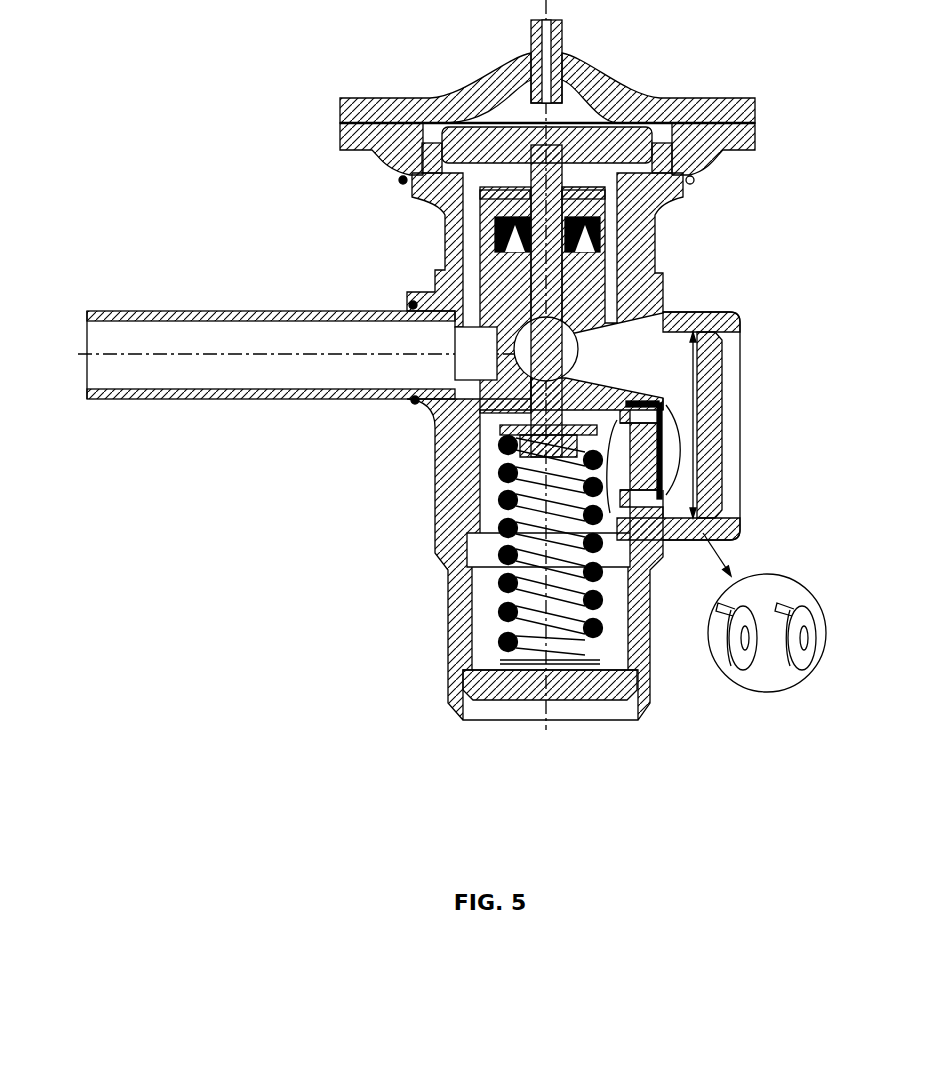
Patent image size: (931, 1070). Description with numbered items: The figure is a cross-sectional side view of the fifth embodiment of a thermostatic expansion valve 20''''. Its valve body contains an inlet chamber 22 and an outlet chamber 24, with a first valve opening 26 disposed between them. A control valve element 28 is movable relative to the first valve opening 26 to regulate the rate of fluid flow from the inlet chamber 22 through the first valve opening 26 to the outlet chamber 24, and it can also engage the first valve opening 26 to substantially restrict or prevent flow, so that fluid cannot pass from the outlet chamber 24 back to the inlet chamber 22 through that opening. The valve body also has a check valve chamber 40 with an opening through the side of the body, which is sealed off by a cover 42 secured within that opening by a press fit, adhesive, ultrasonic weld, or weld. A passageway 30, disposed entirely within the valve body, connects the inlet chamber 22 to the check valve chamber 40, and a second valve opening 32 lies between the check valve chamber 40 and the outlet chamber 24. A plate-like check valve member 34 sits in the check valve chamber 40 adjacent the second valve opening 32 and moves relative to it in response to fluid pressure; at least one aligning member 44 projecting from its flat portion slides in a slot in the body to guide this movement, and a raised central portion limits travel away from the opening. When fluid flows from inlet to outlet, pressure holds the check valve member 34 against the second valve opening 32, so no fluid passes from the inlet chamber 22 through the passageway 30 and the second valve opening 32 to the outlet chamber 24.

The valve 20'''' is at (504, 131).
The inlet chamber 22 is at (580, 348).
The outlet chamber 24 is at (86, 343).
The first valve opening 26 is at (527, 413).
The control valve element 28 is at (580, 337).
The passageway 30 is at (665, 390).
The second valve opening 32 is at (647, 567).
The check valve member 34 is at (660, 470).
The check valve chamber 40 is at (678, 440).
The cover 42 is at (722, 413).
The aligning member 44 is at (658, 403).